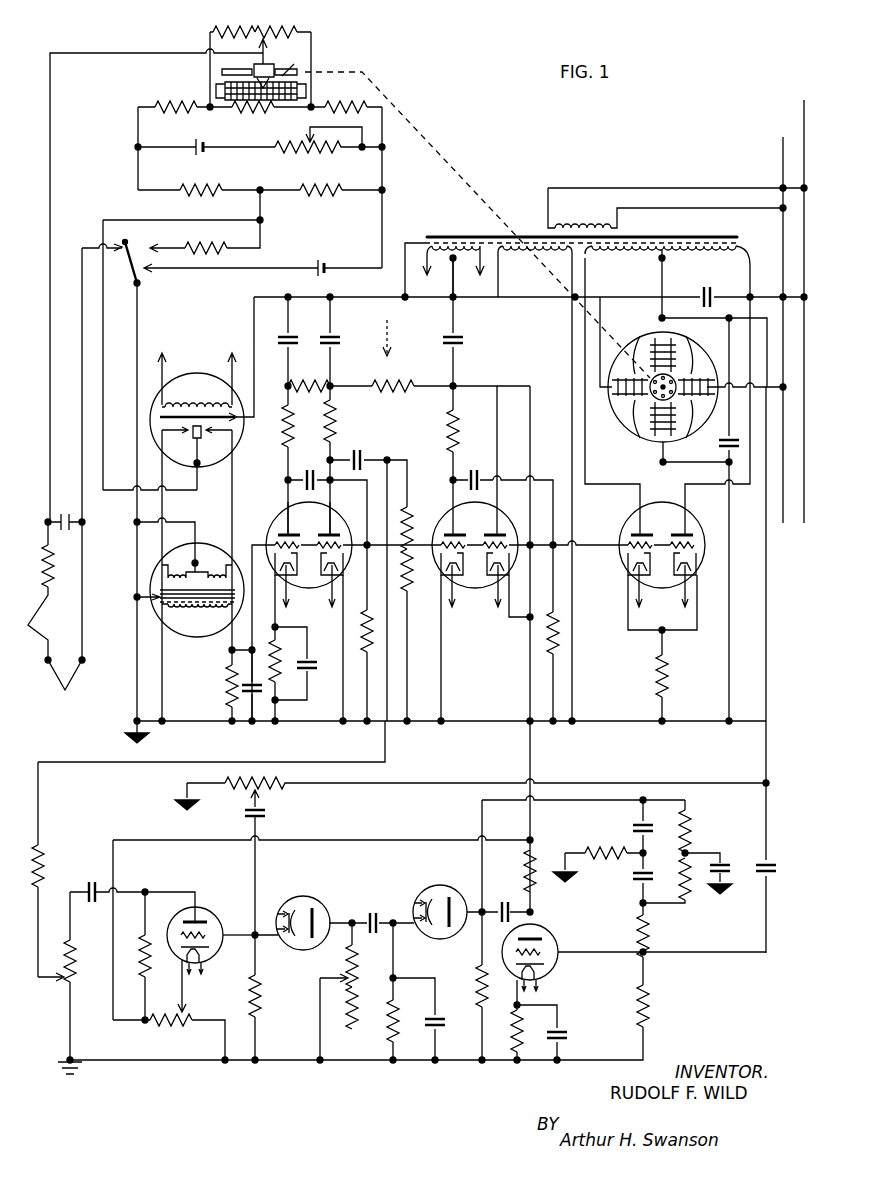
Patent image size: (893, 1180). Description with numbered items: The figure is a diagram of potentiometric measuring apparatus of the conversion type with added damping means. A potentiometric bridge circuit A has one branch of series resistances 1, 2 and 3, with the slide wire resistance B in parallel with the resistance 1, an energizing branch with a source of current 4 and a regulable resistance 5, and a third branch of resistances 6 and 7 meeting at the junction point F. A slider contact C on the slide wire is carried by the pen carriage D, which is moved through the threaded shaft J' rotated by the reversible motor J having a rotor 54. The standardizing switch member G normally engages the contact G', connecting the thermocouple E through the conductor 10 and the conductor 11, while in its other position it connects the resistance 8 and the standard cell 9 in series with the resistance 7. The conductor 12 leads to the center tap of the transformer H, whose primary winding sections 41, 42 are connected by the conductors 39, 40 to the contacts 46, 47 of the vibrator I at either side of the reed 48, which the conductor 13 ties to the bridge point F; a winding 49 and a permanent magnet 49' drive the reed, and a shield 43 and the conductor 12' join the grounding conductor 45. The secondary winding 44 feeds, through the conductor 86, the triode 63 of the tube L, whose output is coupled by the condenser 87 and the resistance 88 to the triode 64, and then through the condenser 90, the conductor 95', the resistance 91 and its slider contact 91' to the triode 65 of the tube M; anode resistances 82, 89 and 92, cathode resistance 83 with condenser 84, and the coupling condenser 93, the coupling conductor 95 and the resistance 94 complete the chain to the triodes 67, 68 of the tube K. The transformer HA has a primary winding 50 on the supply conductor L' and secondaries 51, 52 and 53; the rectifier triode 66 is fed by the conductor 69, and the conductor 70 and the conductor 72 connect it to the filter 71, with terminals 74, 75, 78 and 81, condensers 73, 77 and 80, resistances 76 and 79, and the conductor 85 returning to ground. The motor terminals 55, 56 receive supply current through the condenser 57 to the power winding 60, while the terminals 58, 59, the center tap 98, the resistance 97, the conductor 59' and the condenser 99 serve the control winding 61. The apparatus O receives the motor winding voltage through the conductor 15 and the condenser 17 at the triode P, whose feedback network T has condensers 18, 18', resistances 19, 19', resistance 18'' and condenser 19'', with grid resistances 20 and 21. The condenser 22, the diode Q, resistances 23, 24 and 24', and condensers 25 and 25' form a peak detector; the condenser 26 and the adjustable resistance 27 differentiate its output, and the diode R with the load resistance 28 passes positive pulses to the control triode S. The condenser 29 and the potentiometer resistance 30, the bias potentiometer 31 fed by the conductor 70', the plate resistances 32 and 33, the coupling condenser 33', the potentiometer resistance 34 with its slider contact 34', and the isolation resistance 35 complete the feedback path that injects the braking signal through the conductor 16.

The resistance 1 is at (258, 112).
The resistance 2 is at (171, 102).
The resistance 3 is at (348, 102).
The source of current 4 is at (195, 140).
The regulable resistance 5 is at (304, 150).
The resistance 6 is at (196, 182).
The resistance 7 is at (310, 190).
The resistance 8 is at (210, 242).
The standard cell 9 is at (319, 268).
The conductor 10 is at (50, 163).
The conductor 11 is at (82, 330).
The conductor 12 is at (123, 502).
The conductor 12' is at (117, 661).
The conductor 13 is at (103, 330).
The conductor 15 is at (770, 732).
The conductor 16 is at (385, 745).
The condenser 17 is at (772, 862).
The condenser 18 is at (654, 828).
The condenser 18' is at (656, 878).
The resistance 18'' is at (598, 851).
The resistance 19 is at (701, 828).
The resistance 19' is at (680, 895).
The condenser 19'' is at (721, 865).
The resistance 20 is at (647, 1010).
The resistance 21 is at (645, 934).
The condenser 22 is at (504, 902).
The resistance 23 is at (478, 978).
The load resistance 24 is at (376, 993).
The resistance 24' is at (502, 1021).
The by-pass condenser 25 is at (429, 1020).
The by-pass condenser 25' is at (560, 1034).
The condenser 26 is at (376, 917).
The adjustable resistance 27 is at (357, 992).
The load resistance 28 is at (248, 985).
The coupling condenser 29 is at (266, 815).
The potentiometer resistance 30 is at (248, 788).
The potentiometer resistance 31 is at (188, 1026).
The resistance 32 is at (143, 939).
The resistance 33 is at (544, 862).
The coupling condenser 33' is at (126, 891).
The potentiometer resistance 34 is at (81, 983).
The slider contact 34' is at (41, 988).
The isolation resistance 35 is at (43, 860).
The conductor 39 is at (284, 478).
The conductor 40 is at (162, 507).
The primary winding section 41 is at (218, 572).
The primary winding section 42 is at (172, 572).
The shield 43 is at (238, 576).
The secondary winding 44 is at (197, 620).
The grounding conductor 45 is at (218, 728).
The contact 46 is at (202, 440).
The contact 47 is at (190, 442).
The vibrating reed element 48 is at (199, 466).
The winding 49 is at (197, 373).
The permanent magnet 49' is at (192, 359).
The primary winding 50 is at (573, 224).
The secondary winding 51 is at (695, 261).
The secondary winding 52 is at (531, 252).
The secondary winding 53 is at (444, 263).
The rotor 54 is at (654, 419).
The terminal 55 is at (610, 314).
The terminal 56 is at (729, 358).
The condenser 57 is at (707, 290).
The terminal 58 is at (662, 323).
The terminal 59 is at (679, 457).
The conductor 59' is at (746, 591).
The power winding 60 is at (665, 355).
The control winding 61 is at (696, 419).
The triode 63 is at (268, 540).
The triode 64 is at (338, 525).
The triode 65 is at (410, 518).
The triode 66 is at (502, 525).
The triode 67 is at (630, 533).
The triode 68 is at (694, 535).
The conductor 69 is at (499, 444).
The conductor 70 is at (547, 649).
The conductor 70' is at (556, 749).
The filter 71 is at (388, 327).
The conductor 72 is at (357, 298).
The condenser 73 is at (440, 340).
The negative terminal 74 is at (456, 297).
The positive input terminal 75 is at (455, 386).
The resistance 76 is at (398, 390).
The condenser 77 is at (334, 340).
The filter point 78 is at (332, 386).
The resistance 79 is at (300, 386).
The condenser 80 is at (281, 340).
The filter point 81 is at (284, 386).
The fixed resistance 82 is at (282, 432).
The cathode biasing resistance 83 is at (282, 672).
The condenser 84 is at (312, 666).
The conductor 85 is at (572, 336).
The conductor 86 is at (252, 617).
The condenser 87 is at (312, 474).
The resistance 88 is at (367, 616).
The fixed resistance 89 is at (326, 424).
The condenser 90 is at (357, 460).
The resistance 91 is at (398, 590).
The adjustable slider contact 91' is at (422, 654).
The fixed resistance 92 is at (450, 442).
The condenser 93 is at (472, 476).
The resistance 94 is at (550, 640).
The conductor 95 is at (523, 530).
The conductor 95' is at (416, 482).
The fixed resistance 97 is at (665, 674).
The center tap 98 is at (658, 262).
The condenser 99 is at (725, 447).
The potentiometric bridge circuit A is at (377, 76).
The slide wire resistance B is at (278, 33).
The slider contact C is at (257, 46).
The pen carriage D is at (296, 63).
The thermocouple E is at (58, 684).
The junction point F is at (260, 188).
The switch member G is at (122, 263).
The switch contact G' is at (103, 235).
The transformer H is at (186, 642).
The transformer HA is at (524, 182).
The vibrator I is at (184, 361).
The reversible electric motor J is at (657, 387).
The shaft J' is at (244, 80).
The twin triode tube K is at (636, 514).
The twin triode tube L is at (304, 547).
The twin triode tube M is at (444, 510).
The triode P is at (553, 938).
The diode Q is at (440, 888).
The diode R is at (320, 899).
The control triode S is at (208, 912).
The resistance-capacity network T is at (736, 914).
The apparatus O is at (136, 1103).
The alternating current supply conductor L' is at (788, 311).